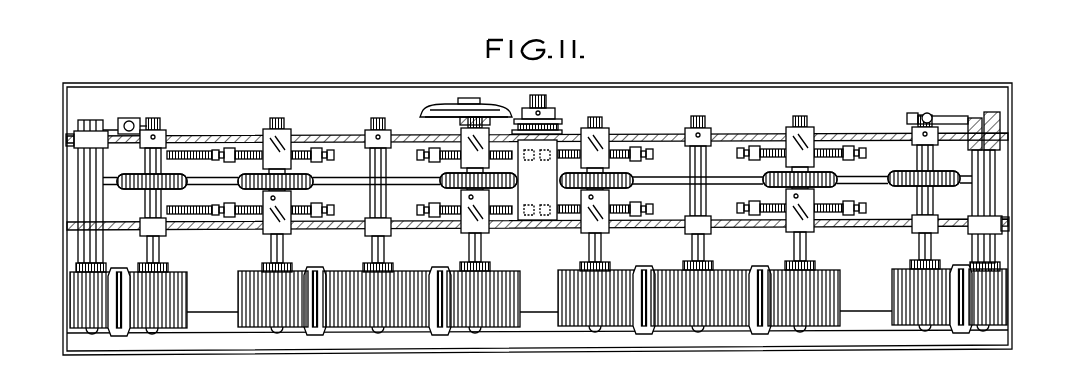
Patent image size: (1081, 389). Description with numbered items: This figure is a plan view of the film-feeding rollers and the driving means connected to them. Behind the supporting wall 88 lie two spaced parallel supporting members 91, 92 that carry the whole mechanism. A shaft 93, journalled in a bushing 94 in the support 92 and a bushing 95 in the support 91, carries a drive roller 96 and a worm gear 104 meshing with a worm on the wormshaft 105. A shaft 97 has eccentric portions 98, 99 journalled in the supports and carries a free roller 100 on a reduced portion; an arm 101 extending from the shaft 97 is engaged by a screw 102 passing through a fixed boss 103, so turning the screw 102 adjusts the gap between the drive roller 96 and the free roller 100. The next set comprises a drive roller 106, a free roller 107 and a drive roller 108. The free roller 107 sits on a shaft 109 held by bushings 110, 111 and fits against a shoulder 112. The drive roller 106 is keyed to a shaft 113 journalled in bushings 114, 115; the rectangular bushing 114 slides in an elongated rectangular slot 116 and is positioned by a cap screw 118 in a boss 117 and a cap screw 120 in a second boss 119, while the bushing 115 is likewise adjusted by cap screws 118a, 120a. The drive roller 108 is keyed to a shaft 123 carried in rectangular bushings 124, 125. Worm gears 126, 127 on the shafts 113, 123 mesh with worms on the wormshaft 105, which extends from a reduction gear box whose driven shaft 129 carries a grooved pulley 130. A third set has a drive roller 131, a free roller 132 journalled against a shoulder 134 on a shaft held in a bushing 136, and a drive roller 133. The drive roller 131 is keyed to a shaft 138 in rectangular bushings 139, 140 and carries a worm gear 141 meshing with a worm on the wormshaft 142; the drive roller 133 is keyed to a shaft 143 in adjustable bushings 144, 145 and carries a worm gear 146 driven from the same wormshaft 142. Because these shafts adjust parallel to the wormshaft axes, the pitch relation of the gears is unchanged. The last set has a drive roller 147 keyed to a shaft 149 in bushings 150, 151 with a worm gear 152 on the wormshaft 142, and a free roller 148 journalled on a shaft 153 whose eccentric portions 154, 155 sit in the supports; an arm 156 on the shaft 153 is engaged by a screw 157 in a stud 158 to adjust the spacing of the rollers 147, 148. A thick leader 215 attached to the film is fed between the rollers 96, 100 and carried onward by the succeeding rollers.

The supporting wall 88 is at (224, 236).
The supporting member 91 is at (200, 221).
The supporting member 92 is at (226, 136).
The shaft 93 is at (160, 128).
The bushing 94 is at (176, 138).
The bushing 95 is at (160, 233).
The drive roller 96 is at (145, 330).
The shaft 97 is at (87, 118).
The eccentric portion 98 is at (106, 147).
The eccentric portion 99 is at (104, 211).
The free roller 100 is at (80, 330).
The arm 101 is at (118, 120).
The screw 102 is at (133, 122).
The fixed boss 103 is at (147, 128).
The worm gear 104 is at (165, 176).
The wormshaft 105 is at (198, 181).
The drive roller 106 is at (268, 322).
The free roller 107 is at (366, 322).
The drive roller 108 is at (490, 322).
The shaft 109 is at (386, 168).
The bushing 110 is at (383, 128).
The bushing 111 is at (390, 221).
The shoulder 112 is at (392, 258).
The shaft 113 is at (278, 127).
The bushing 114 is at (286, 140).
The bushing 115 is at (284, 224).
The elongated rectangular slot 116 is at (272, 256).
The boss 117 is at (319, 149).
The cap screw 118 is at (337, 157).
The cap screw 118a is at (312, 207).
The boss 119 is at (236, 151).
The cap screw 120 is at (213, 155).
The cap screw 120a is at (240, 205).
The shaft 123 is at (470, 104).
The rectangular bushing 124 is at (465, 135).
The rectangular bushing 125 is at (470, 231).
The worm gear 126 is at (305, 179).
The worm gear 127 is at (458, 186).
The driven shaft 129 is at (547, 101).
The grooved pulley 130 is at (552, 124).
The drive roller 131 is at (595, 322).
The free roller 132 is at (690, 322).
The drive roller 133 is at (835, 322).
The shoulder 134 is at (711, 265).
The bushing 136 is at (712, 134).
The shaft 138 is at (603, 250).
The rectangular bushing 139 is at (606, 134).
The rectangular bushing 140 is at (587, 228).
The worm gear 141 is at (636, 186).
The wormshaft 142 is at (656, 177).
The shaft 143 is at (812, 253).
The adjustable bushing 144 is at (807, 142).
The adjustable bushing 145 is at (796, 228).
The worm gear 146 is at (760, 184).
The drive roller 147 is at (940, 322).
The free roller 148 is at (980, 325).
The shaft 149 is at (919, 244).
The bushing 150 is at (934, 139).
The bushing 151 is at (938, 217).
The worm gear 152 is at (899, 174).
The shaft 153 is at (976, 118).
The eccentric portion 154 is at (1000, 108).
The eccentric portion 155 is at (1009, 217).
The arm 156 is at (934, 117).
The screw 157 is at (915, 120).
The stud 158 is at (907, 120).
The leader 215 is at (113, 298).